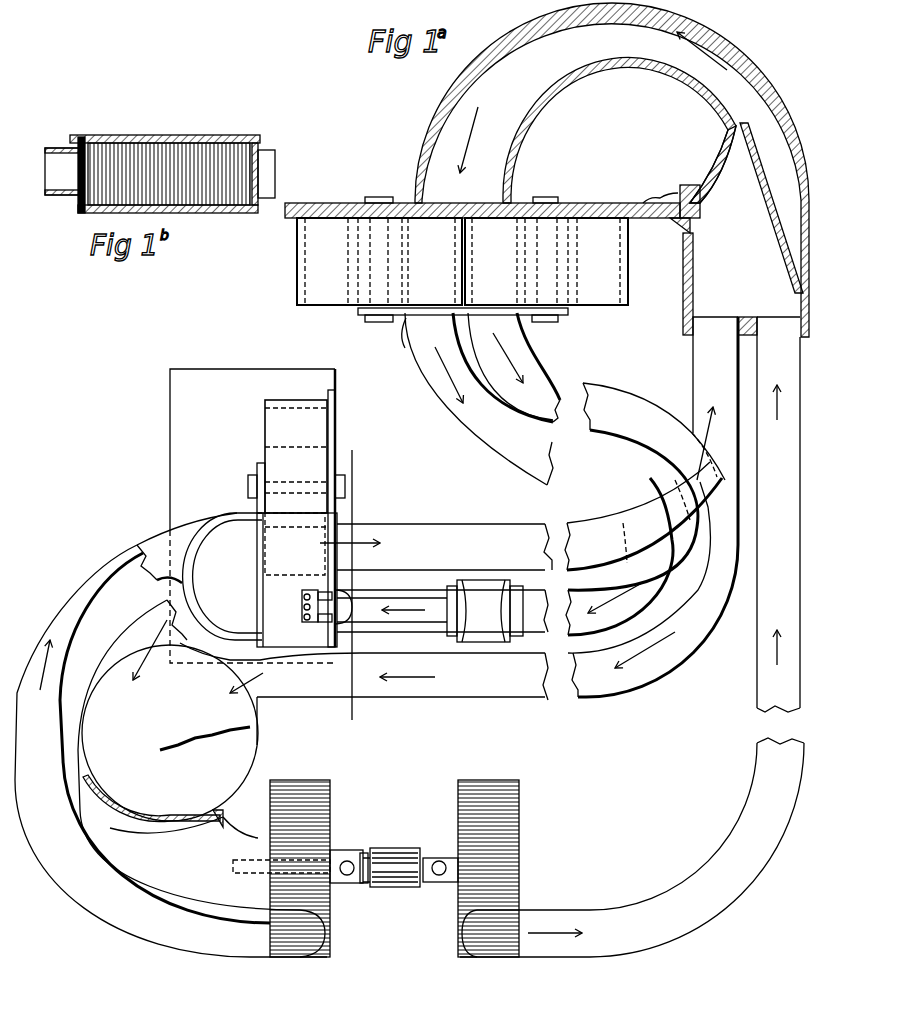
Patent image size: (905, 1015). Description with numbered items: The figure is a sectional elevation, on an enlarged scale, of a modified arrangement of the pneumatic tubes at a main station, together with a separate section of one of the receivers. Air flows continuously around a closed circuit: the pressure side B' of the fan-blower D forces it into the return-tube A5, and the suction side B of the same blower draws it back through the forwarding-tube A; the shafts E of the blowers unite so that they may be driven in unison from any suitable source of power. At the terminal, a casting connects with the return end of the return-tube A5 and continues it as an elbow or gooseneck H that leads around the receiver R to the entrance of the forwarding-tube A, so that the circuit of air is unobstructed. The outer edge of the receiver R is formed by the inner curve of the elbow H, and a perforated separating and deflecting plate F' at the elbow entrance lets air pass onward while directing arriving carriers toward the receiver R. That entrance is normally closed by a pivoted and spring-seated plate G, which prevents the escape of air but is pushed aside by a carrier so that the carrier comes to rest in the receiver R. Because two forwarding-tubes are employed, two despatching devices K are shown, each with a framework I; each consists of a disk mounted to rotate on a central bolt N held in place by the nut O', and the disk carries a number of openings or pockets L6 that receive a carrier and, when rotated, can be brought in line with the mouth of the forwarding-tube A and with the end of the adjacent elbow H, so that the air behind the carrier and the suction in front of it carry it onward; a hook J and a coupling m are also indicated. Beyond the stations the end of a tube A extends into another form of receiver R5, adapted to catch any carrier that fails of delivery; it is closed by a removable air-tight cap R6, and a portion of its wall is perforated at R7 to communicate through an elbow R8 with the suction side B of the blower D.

In FIG. 1A, the elbow H is at (768, 38).
In FIG. 1A, the receiver R is at (212, 524).
In FIG. 1A, the pivoted spring-seated plate G is at (716, 146).
In FIG. 1A, the inclined partition F' is at (771, 208).
In FIG. 1A, the delivering device K is at (297, 262).
In FIG. 1A, the nut O' is at (446, 340).
In FIG. 1A, the openings or pockets L6 is at (605, 320).
In FIG. 1A, the central bolt N is at (378, 322).
In FIG. 1A, the hook J is at (397, 337).
In FIG. 1A, the housing I is at (261, 544).
In FIG. 1A, the coupling link m is at (342, 598).
In FIG. 1A, the forwarding-tube A is at (420, 374).
In FIG. 1B, the forwarding-tube A is at (273, 172).
In FIG. 1A, the return-tube A5 is at (756, 782).
In FIG. 1A, the receiver R5 is at (254, 730).
In FIG. 1B, the receiver R5 is at (169, 174).
In FIG. 1B, the removable air-tight cap R6 is at (208, 137).
In FIG. 1B, the perforated wall portion R7 is at (62, 197).
In FIG. 1A, the elbow R8 is at (259, 861).
In FIG. 1B, the elbow R8 is at (55, 160).
In FIG. 1A, the suction side B is at (371, 868).
In FIG. 1A, the pressure side B' is at (385, 924).
In FIG. 1A, the fan-blower D is at (390, 840).
In FIG. 1A, the shaft E is at (450, 857).